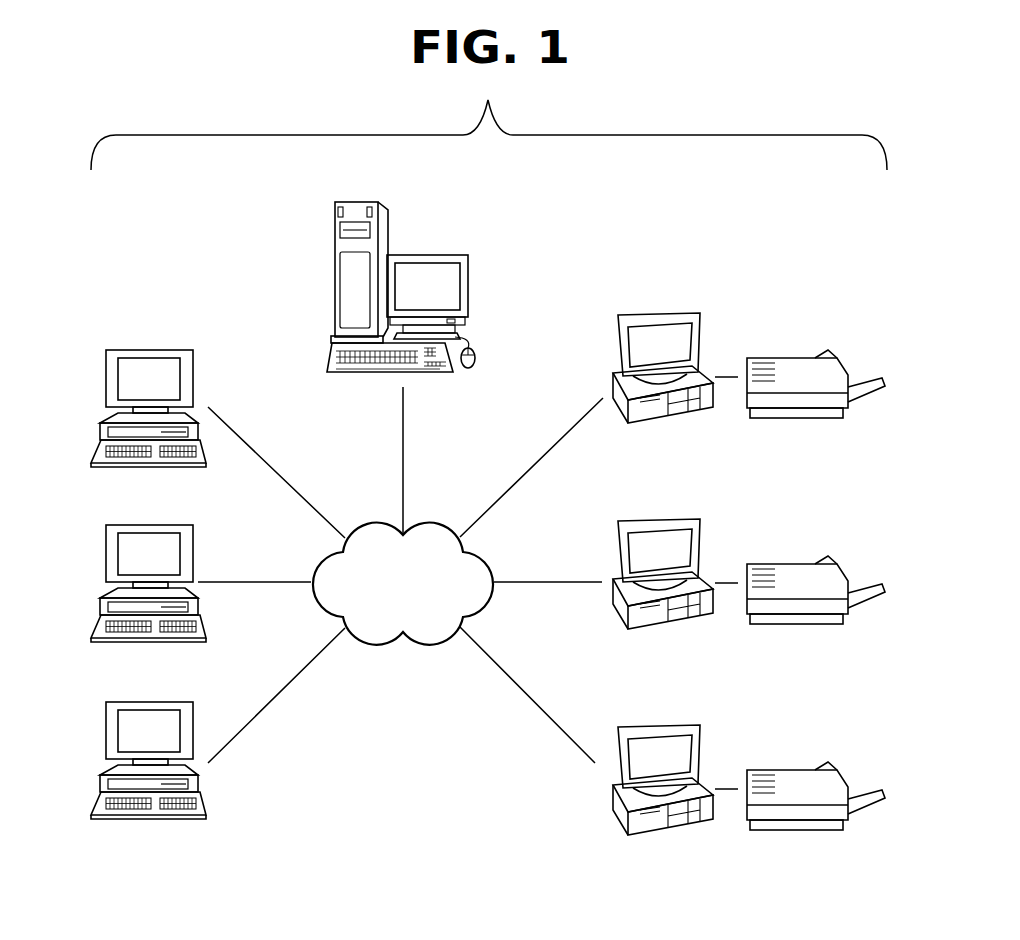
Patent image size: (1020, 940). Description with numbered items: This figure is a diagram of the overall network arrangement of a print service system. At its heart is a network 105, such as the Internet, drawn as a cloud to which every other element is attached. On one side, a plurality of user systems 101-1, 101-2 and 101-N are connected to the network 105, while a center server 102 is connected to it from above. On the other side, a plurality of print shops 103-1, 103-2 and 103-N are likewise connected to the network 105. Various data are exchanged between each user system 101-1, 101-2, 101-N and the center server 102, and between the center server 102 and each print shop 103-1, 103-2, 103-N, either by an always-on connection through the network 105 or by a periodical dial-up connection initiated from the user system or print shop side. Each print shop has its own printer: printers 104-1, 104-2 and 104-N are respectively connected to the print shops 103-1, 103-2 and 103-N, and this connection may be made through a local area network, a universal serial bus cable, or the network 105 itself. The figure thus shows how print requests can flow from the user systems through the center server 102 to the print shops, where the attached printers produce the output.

The user system 101-1 is at (195, 372).
The user system 101-2 is at (195, 546).
The user system 101-N is at (205, 800).
The center server 102 is at (432, 251).
The print shop 103-1 is at (610, 376).
The print shop 103-2 is at (612, 556).
The print shop 103-N is at (612, 790).
The printer 104-1 is at (790, 358).
The printer 104-2 is at (790, 566).
The printer 104-N is at (790, 770).
The network 105 is at (378, 645).